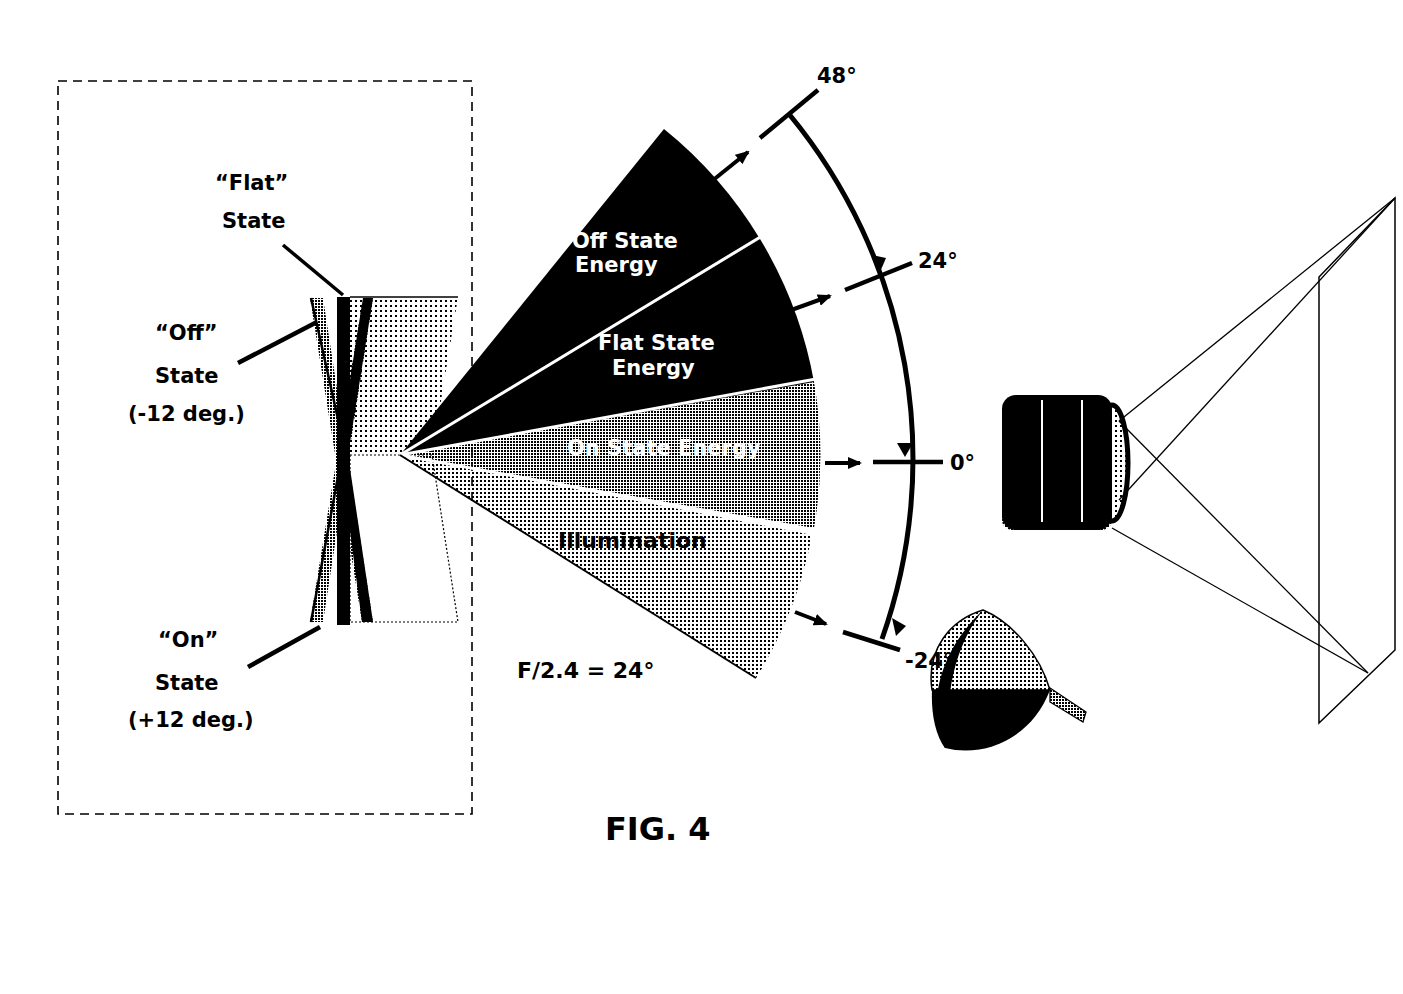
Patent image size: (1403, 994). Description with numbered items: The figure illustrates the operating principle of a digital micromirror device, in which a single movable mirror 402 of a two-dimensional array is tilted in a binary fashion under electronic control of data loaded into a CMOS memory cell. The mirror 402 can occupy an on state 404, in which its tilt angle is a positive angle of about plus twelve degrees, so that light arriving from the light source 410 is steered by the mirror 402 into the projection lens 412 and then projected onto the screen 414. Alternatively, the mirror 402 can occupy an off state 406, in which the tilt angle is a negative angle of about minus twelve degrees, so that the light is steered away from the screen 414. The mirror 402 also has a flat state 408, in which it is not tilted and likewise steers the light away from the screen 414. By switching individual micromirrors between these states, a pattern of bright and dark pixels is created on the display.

The mirror 402 is at (266, 81).
The on state 404 is at (318, 571).
The off state 406 is at (316, 297).
The flat state 408 is at (351, 297).
The light source 410 is at (938, 742).
The projection lens 412 is at (1090, 396).
The screen 414 is at (1337, 706).